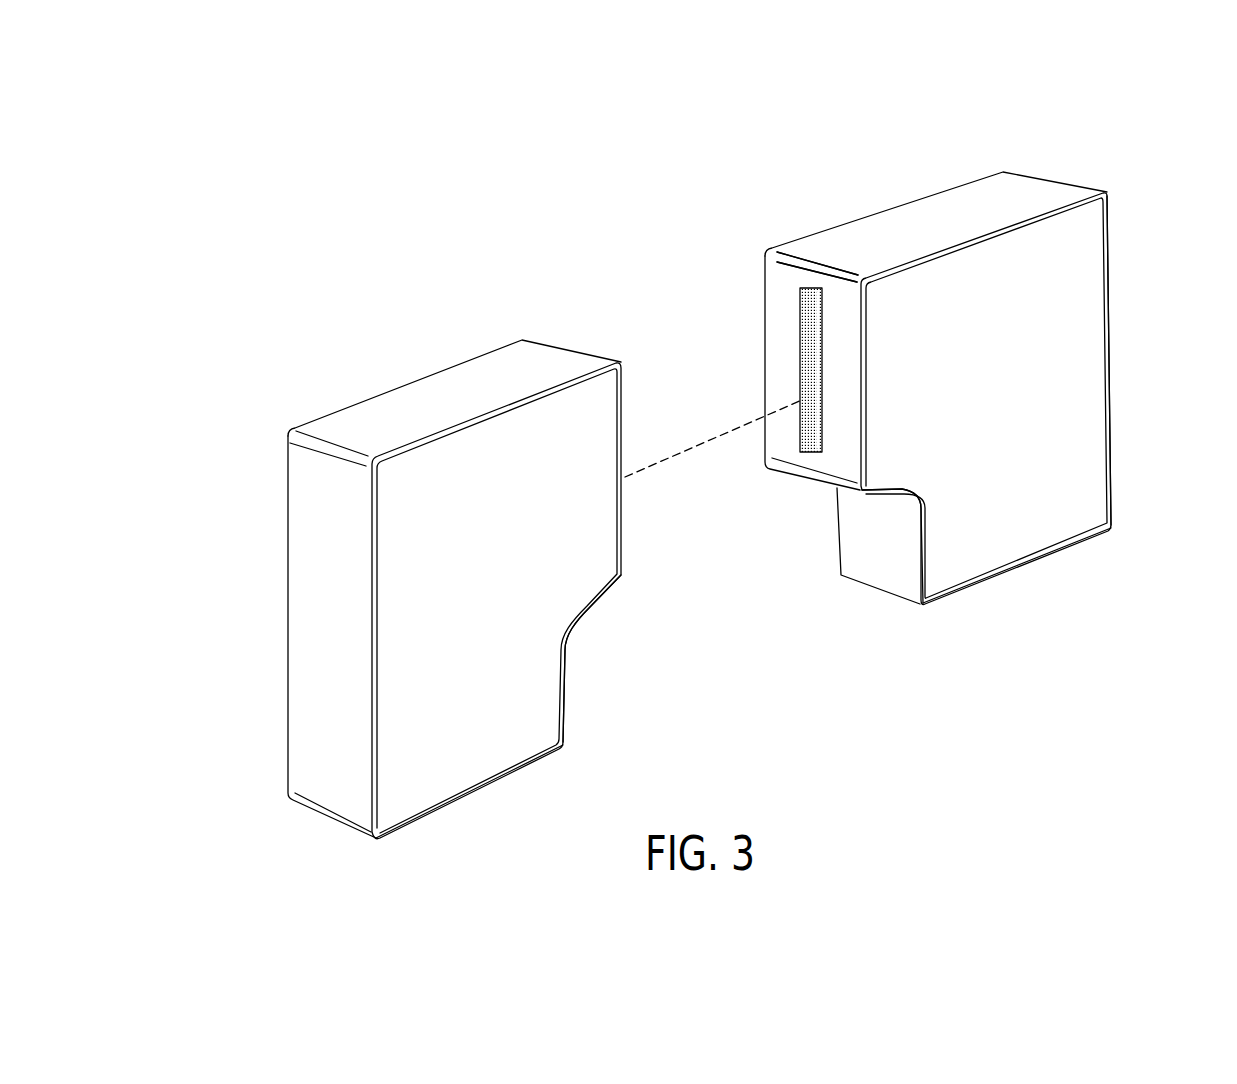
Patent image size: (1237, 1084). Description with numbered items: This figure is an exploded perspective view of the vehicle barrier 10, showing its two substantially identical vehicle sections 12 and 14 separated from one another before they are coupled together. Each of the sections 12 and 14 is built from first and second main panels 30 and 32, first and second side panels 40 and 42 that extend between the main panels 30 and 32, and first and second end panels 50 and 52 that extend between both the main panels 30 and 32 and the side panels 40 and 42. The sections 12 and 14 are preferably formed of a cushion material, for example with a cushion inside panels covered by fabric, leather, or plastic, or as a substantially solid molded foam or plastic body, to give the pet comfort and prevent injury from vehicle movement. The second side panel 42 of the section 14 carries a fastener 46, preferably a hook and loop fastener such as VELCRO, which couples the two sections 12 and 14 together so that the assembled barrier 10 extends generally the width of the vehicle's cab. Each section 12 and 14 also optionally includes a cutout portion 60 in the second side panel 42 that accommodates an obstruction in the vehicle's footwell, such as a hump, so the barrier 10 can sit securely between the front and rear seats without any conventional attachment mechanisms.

The vehicle barrier 10 is at (437, 274).
The first vehicle section 12 is at (356, 396).
The second vehicle section 14 is at (915, 197).
The first main panel 30 is at (503, 587).
The second main panel 32 is at (994, 393).
The first side panel 40 is at (310, 617).
The second side panel 42 is at (785, 287).
The fastener 46 is at (800, 380).
The first end panel 50 is at (515, 363).
The second end panel 52 is at (497, 788).
The cutout portion 60 is at (567, 645).